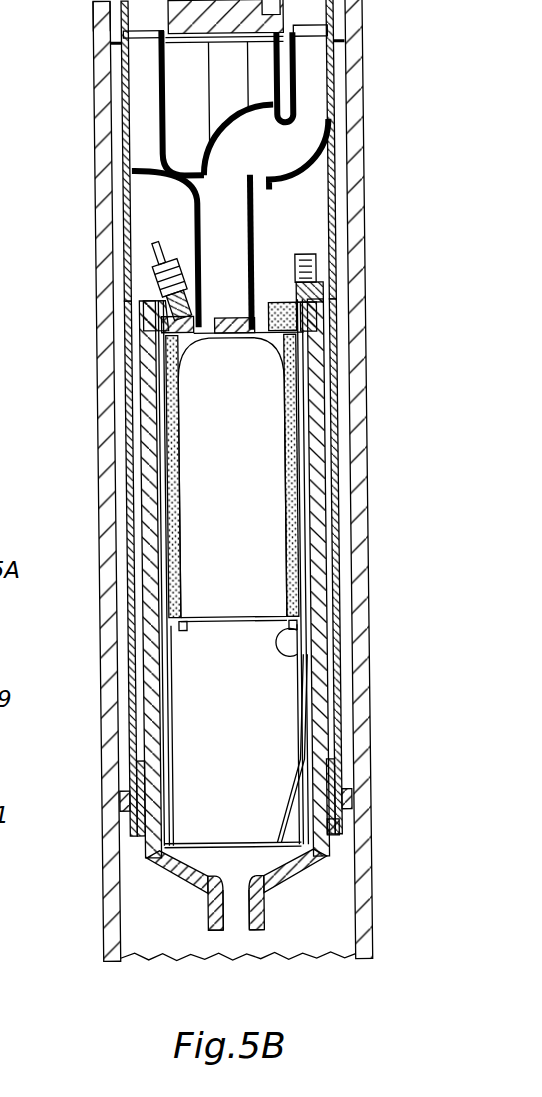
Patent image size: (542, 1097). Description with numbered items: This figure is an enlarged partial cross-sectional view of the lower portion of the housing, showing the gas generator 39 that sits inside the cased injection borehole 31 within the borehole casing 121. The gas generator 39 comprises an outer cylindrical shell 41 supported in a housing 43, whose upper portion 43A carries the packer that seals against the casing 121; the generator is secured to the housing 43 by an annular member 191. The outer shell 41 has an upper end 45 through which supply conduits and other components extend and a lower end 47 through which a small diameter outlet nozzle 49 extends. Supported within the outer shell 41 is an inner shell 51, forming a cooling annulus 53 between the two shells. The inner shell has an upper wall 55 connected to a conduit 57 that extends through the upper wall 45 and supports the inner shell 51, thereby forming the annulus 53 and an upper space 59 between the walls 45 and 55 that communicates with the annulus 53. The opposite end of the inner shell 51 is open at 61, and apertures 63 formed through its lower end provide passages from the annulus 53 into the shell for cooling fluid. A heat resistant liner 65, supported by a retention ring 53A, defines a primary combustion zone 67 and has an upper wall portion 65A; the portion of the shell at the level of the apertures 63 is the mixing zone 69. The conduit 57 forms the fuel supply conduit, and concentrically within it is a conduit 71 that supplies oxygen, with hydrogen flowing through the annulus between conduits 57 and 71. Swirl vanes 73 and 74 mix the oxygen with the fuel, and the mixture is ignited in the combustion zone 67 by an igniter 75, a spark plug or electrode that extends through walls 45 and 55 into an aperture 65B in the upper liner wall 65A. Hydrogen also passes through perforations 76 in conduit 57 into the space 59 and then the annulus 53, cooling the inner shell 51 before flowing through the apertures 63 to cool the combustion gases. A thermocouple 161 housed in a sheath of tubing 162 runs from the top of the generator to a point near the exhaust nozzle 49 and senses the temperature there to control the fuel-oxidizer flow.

The injection borehole 31 is at (362, 64).
The gas generator 39 is at (188, 898).
The outer cylindrical shell 41 is at (333, 492).
The housing 43 is at (355, 535).
The upper portion of the housing 43A is at (108, 22).
The upper end of the outer shell 45 is at (262, 285).
The lower end of the outer shell 47 is at (300, 888).
The outlet nozzle 49 is at (238, 917).
The inner shell 51 is at (305, 410).
The cooling annulus 53 is at (160, 552).
The retention ring 53A is at (313, 645).
The upper wall of the inner shell 55 is at (305, 321).
The conduit 57 is at (292, 160).
The upper space 59 is at (316, 292).
The open end of the inner shell 61 is at (192, 835).
The apertures 63 is at (160, 712).
The heat resistant liner 65 is at (150, 470).
The upper wall portion of the liner 65A is at (308, 352).
The aperture in the upper liner wall 65B is at (157, 345).
The primary combustion zone 67 is at (243, 477).
The mixing zone 69 is at (243, 712).
The conduit 71 is at (150, 172).
The swirl vanes 73 is at (160, 358).
The swirl vanes 74 is at (168, 376).
The igniter 75 is at (145, 255).
The perforations 76 is at (150, 297).
The borehole casing 121 is at (110, 853).
The thermocouple 161 is at (265, 848).
The sheath of tubing 162 is at (305, 740).
The annular member 191 is at (340, 820).